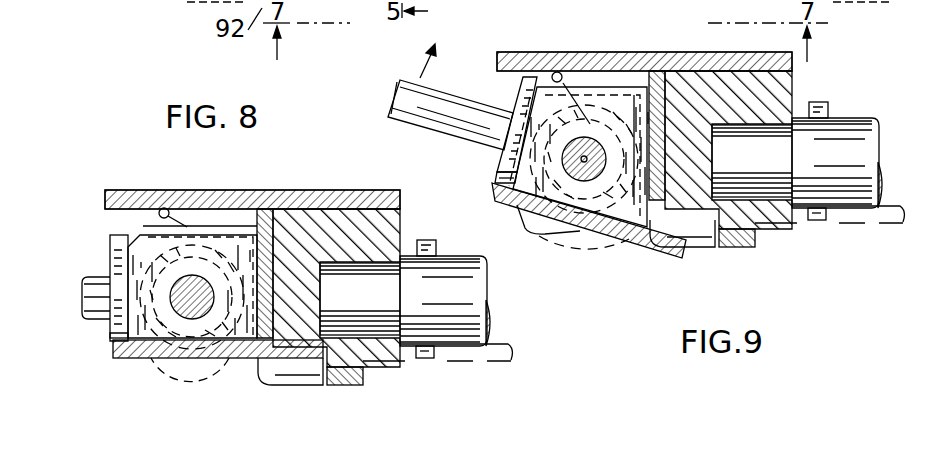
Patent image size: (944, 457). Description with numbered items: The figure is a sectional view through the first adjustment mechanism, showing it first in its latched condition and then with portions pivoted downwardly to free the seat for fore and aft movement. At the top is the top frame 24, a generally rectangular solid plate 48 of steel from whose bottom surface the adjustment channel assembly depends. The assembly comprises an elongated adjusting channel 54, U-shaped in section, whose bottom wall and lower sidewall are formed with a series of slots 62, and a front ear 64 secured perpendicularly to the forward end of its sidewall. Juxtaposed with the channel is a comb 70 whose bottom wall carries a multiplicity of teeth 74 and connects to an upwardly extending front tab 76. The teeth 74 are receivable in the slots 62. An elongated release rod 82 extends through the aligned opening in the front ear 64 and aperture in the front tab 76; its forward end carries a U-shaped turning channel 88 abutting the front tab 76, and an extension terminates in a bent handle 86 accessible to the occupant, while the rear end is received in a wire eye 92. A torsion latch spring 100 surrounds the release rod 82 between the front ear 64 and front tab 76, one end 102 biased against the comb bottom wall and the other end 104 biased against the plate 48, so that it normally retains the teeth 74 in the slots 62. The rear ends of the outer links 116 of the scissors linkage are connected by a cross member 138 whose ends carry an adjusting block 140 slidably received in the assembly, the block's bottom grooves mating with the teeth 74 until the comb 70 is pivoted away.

In FIG. 8, the top frame 24 is at (125, 182).
In FIG. 9, the top frame 24 is at (516, 42).
In FIG. 8, the plate 48 is at (292, 202).
In FIG. 9, the plate 48 is at (584, 56).
In FIG. 8, the adjusting channel 54 is at (353, 196).
In FIG. 9, the adjusting channel 54 is at (699, 60).
In FIG. 8, the slots 62 is at (308, 377).
In FIG. 9, the slots 62 is at (708, 252).
In FIG. 8, the front ear 64 is at (241, 250).
In FIG. 9, the front ear 64 is at (657, 135).
In FIG. 8, the comb 70 is at (118, 357).
In FIG. 9, the comb 70 is at (642, 240).
In FIG. 8, the teeth 74 is at (315, 372).
In FIG. 9, the teeth 74 is at (688, 252).
In FIG. 9, the front tab 76 is at (632, 100).
In FIG. 9, the release rod 82 is at (583, 165).
In FIG. 8, the handle 86 is at (98, 322).
In FIG. 9, the handle 86 is at (403, 83).
In FIG. 8, the turning channel 88 is at (118, 238).
In FIG. 9, the turning channel 88 is at (524, 84).
In FIG. 8, the wire eye 92 is at (197, 374).
In FIG. 9, the wire eye 92 is at (588, 242).
In FIG. 8, the torsion latch spring 100 is at (207, 253).
In FIG. 9, the torsion latch spring 100 is at (586, 124).
In FIG. 8, the spring end 102 is at (112, 338).
In FIG. 9, the spring end 102 is at (496, 176).
In FIG. 8, the spring end 104 is at (172, 206).
In FIG. 9, the spring end 104 is at (555, 70).
In FIG. 8, the outer links 116 is at (427, 368).
In FIG. 9, the outer links 116 is at (817, 224).
In FIG. 8, the cross member 138 is at (467, 293).
In FIG. 9, the cross member 138 is at (847, 148).
In FIG. 8, the adjusting block 140 is at (383, 242).
In FIG. 9, the adjusting block 140 is at (780, 103).